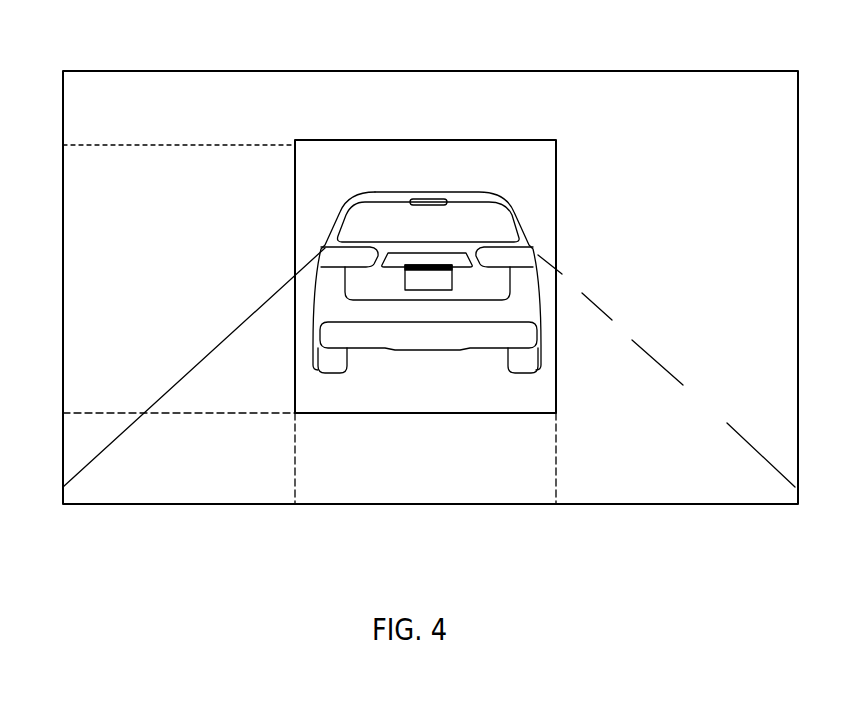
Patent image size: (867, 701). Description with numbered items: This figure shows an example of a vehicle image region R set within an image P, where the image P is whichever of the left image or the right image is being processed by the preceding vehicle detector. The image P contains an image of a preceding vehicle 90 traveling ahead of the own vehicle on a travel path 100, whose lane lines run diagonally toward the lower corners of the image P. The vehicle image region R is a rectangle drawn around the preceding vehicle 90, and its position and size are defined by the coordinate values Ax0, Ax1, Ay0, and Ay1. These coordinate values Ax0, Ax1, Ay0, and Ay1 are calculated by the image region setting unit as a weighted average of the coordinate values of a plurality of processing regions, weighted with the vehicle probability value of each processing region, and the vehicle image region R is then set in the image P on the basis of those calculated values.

The image P is at (684, 70).
The vehicle image region R is at (533, 150).
The preceding vehicle 90 is at (407, 228).
The travel path 100 is at (708, 492).
The coordinate value Ax0 is at (295, 475).
The coordinate value Ax1 is at (555, 475).
The coordinate value Ay0 is at (158, 413).
The coordinate value Ay1 is at (158, 147).